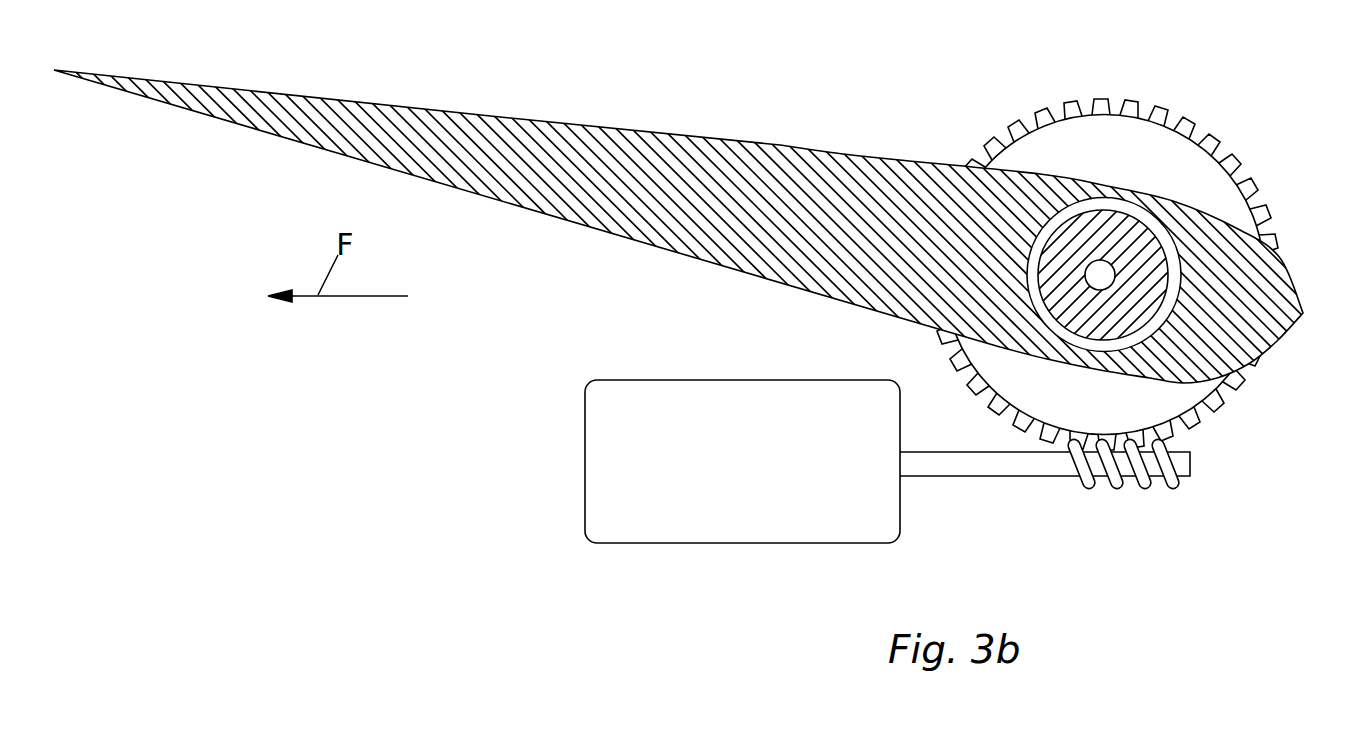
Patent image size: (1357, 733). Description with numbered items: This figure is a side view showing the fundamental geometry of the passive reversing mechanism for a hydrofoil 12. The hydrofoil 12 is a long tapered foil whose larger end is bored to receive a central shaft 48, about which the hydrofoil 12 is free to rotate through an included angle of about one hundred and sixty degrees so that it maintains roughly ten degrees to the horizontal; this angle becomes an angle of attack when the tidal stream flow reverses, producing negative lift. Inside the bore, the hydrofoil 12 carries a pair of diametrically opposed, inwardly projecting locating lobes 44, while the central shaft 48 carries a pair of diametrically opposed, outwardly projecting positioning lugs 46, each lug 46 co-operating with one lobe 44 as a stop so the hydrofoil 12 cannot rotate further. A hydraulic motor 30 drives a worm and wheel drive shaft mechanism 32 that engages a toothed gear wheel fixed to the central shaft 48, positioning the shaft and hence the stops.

The hydrofoil 12 is at (470, 110).
The hydraulic motor 30 is at (693, 540).
The worm and wheel drive shaft mechanism 32 is at (970, 477).
The hydrofoil locating lobe 44 is at (1027, 267).
The positioning lug 46 is at (1028, 273).
The central shaft 48 is at (1133, 304).